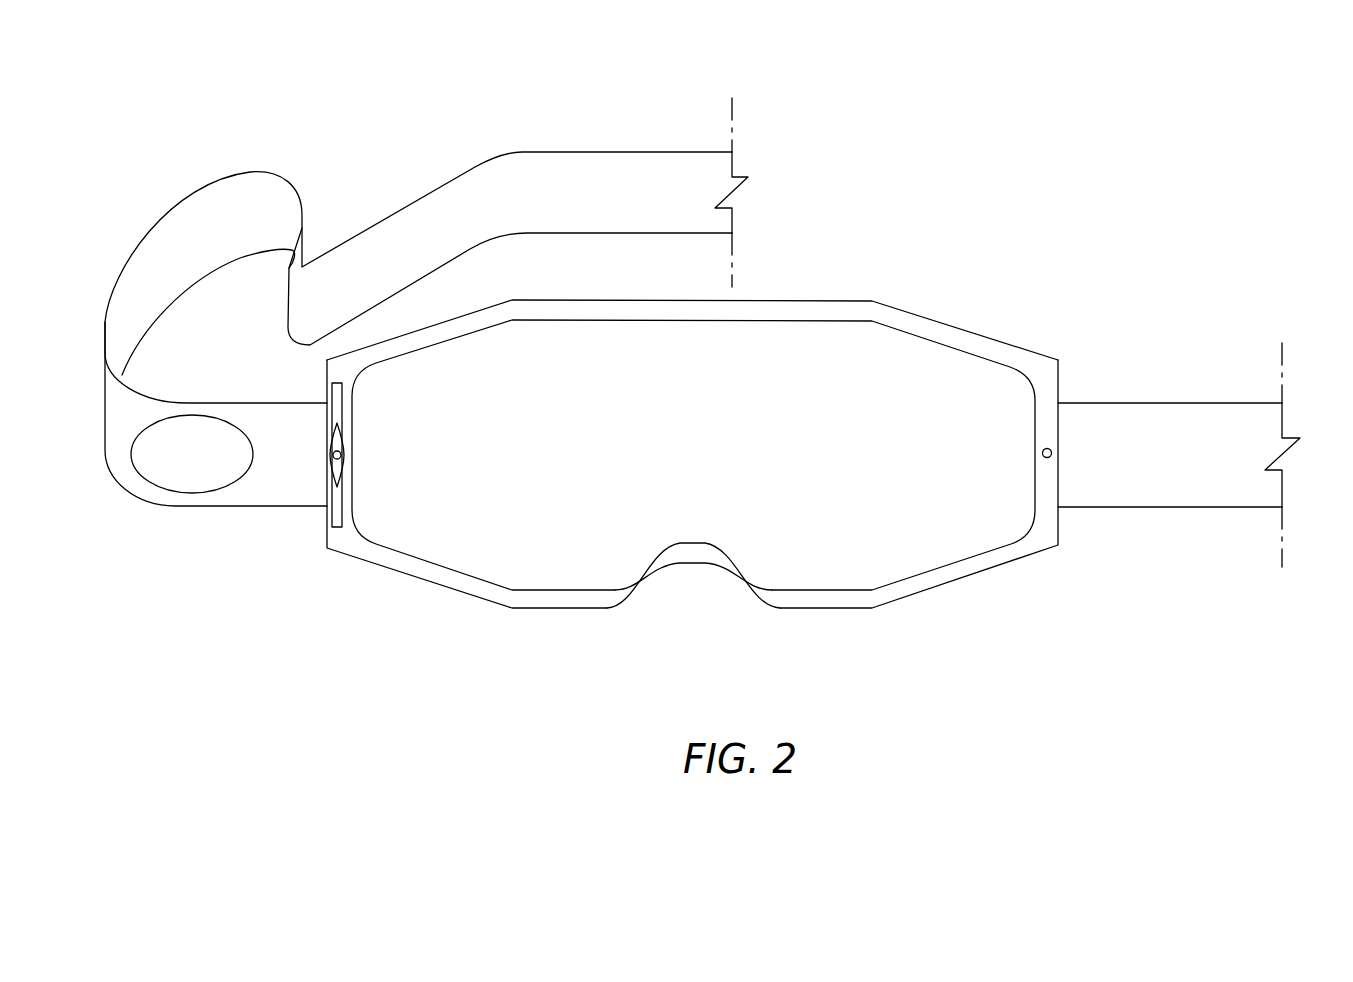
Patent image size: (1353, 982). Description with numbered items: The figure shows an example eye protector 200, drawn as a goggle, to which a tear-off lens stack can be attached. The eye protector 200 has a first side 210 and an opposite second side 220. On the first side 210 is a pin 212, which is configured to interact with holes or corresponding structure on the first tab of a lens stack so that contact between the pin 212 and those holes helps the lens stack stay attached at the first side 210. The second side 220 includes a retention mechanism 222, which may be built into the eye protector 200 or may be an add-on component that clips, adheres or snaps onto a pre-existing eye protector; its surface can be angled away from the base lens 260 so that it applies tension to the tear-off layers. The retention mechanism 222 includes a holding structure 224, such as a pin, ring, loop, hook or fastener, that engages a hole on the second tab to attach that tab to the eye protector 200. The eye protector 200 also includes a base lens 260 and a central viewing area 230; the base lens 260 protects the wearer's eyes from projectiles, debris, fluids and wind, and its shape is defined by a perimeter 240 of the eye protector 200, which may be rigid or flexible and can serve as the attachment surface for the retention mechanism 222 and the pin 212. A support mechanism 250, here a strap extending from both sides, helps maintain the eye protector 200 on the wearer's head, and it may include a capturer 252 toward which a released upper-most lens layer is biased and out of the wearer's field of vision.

The eye protector 200 is at (702, 390).
The first side 210 is at (930, 484).
The pin 212 is at (1041, 453).
The second side 220 is at (464, 484).
The retention mechanism 222 is at (344, 390).
The holding structure 224 is at (345, 455).
The central viewing area 230 is at (803, 528).
The perimeter 240 is at (850, 310).
The support mechanism 250 is at (702, 339).
The capturer 252 is at (193, 495).
The base lens 260 is at (935, 360).